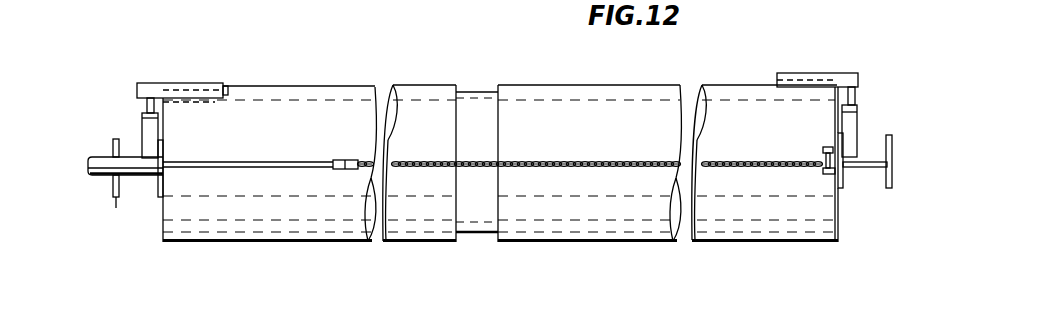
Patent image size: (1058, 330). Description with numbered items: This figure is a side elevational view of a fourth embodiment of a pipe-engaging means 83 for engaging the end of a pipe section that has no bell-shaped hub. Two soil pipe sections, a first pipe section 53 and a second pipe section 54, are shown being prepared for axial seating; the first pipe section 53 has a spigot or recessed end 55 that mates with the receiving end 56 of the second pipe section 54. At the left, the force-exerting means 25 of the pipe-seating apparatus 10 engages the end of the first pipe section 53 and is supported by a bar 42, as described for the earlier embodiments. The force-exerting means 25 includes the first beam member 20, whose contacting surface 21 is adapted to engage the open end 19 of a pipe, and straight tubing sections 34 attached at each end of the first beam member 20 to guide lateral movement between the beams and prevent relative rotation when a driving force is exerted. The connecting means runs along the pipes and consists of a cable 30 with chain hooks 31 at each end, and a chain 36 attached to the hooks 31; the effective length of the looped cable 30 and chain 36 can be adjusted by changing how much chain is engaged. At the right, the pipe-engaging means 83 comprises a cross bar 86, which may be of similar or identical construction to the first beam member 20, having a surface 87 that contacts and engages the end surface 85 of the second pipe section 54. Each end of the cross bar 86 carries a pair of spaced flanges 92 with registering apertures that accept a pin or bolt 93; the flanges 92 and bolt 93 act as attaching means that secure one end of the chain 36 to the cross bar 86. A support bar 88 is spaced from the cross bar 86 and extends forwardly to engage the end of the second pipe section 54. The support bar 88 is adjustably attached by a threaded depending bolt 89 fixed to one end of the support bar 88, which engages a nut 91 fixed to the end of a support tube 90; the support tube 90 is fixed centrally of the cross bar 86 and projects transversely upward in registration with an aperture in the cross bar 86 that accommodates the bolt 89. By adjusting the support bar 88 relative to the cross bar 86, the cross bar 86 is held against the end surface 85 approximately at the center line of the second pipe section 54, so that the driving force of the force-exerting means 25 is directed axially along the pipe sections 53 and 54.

The pipe-seating apparatus 10 is at (115, 94).
The open end 19 is at (165, 233).
The first beam member 20 is at (130, 192).
The contacting surface 21 is at (167, 147).
The force-exerting means 25 is at (103, 143).
The cable 30 is at (253, 162).
The chain hooks 31 is at (345, 160).
The straight tubing sections 34 is at (110, 188).
The chain 36 is at (585, 161).
The bar 42 is at (157, 83).
The first pipe section 53 is at (275, 86).
The second pipe section 54 is at (652, 83).
The spigot or recessed end 55 is at (477, 92).
The receiving end 56 is at (517, 83).
The pipe-engaging means 83 is at (870, 73).
The end surface 85 is at (838, 230).
The cross bar 86 is at (892, 172).
The surface 87 is at (835, 183).
The support bar 88 is at (792, 73).
The threaded depending bolt 89 is at (857, 98).
The support tube 90 is at (858, 130).
The nut 91 is at (835, 110).
The spaced flanges 92 is at (823, 172).
The bolt 93 is at (830, 149).